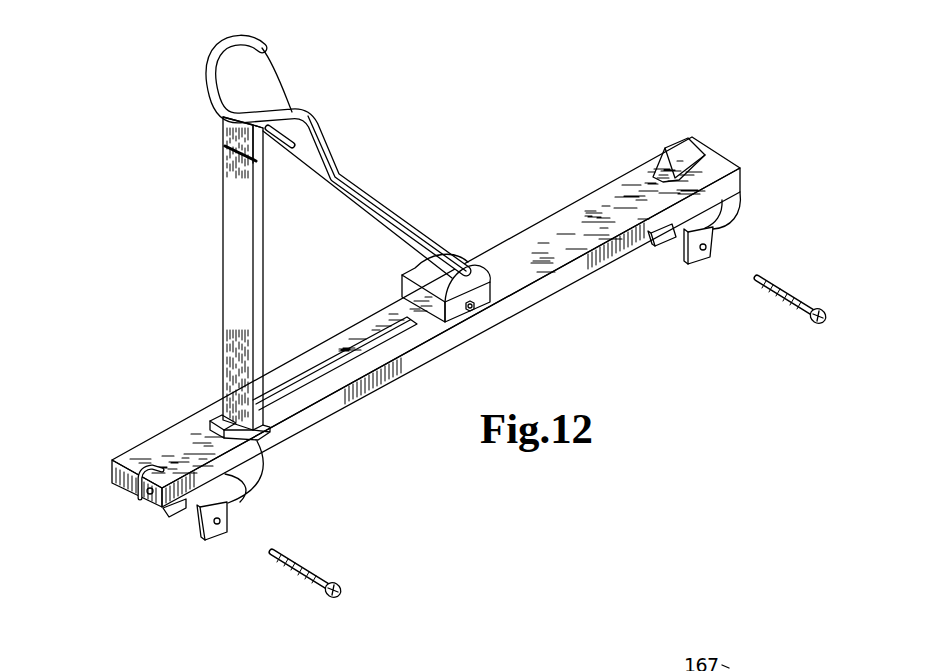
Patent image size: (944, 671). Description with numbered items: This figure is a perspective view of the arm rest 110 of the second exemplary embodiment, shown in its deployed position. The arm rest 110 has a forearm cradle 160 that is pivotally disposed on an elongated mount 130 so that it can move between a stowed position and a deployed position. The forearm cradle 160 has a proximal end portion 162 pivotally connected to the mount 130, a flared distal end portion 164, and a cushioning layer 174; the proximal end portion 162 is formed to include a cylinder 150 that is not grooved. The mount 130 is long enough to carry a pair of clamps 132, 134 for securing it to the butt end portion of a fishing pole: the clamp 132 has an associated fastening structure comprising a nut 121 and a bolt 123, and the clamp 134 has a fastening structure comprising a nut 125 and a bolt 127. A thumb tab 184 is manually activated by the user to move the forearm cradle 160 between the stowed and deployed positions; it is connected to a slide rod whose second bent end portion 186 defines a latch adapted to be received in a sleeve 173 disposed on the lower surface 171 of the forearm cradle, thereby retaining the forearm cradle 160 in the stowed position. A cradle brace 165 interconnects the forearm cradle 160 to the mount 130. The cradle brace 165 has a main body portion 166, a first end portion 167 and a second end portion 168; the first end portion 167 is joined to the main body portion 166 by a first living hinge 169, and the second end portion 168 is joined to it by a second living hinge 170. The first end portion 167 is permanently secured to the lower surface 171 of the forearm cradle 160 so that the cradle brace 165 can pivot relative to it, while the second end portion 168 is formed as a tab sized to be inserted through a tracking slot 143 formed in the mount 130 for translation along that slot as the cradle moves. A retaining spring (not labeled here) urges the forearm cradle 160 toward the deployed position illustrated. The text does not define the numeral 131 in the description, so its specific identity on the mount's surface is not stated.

The arm rest 110 is at (170, 243).
The nut 121 is at (76, 425).
The bolt 123 is at (305, 563).
The nut 125 is at (558, 150).
The bolt 127 is at (783, 290).
The mount 130 is at (514, 270).
The rail top surface 131 is at (557, 252).
The clamp 132 is at (190, 525).
The clamp 134 is at (667, 252).
The tracking slot 143 is at (352, 358).
The cylinder 150 is at (421, 258).
The forearm cradle 160 is at (338, 154).
The proximal end portion 162 is at (455, 262).
The flared distal end portion 164 is at (262, 78).
The cradle brace 165 is at (282, 281).
The main body portion 166 is at (222, 292).
The first end portion 167 is at (232, 131).
The second end portion 168 is at (216, 418).
The first living hinge 169 is at (227, 146).
The second living hinge 170 is at (248, 433).
The lower surface 171 is at (309, 154).
The sleeve 173 is at (282, 145).
The cushioning layer 174 is at (320, 138).
The thumb tab 184 is at (660, 150).
The second bent end portion 186 is at (116, 464).